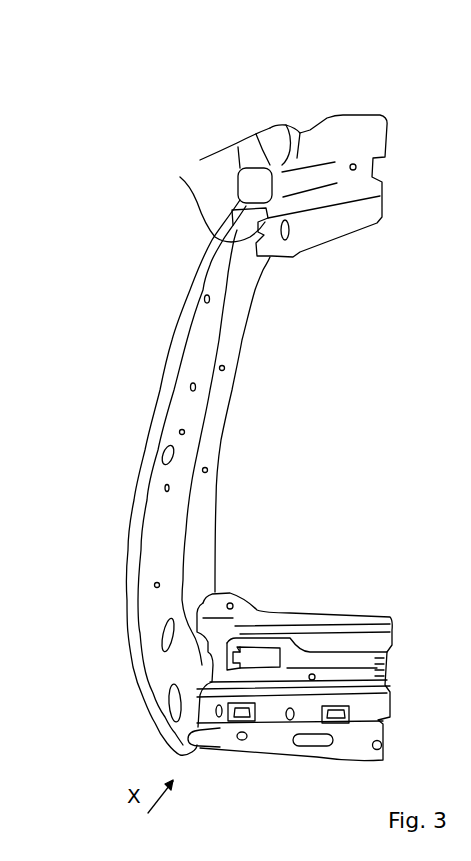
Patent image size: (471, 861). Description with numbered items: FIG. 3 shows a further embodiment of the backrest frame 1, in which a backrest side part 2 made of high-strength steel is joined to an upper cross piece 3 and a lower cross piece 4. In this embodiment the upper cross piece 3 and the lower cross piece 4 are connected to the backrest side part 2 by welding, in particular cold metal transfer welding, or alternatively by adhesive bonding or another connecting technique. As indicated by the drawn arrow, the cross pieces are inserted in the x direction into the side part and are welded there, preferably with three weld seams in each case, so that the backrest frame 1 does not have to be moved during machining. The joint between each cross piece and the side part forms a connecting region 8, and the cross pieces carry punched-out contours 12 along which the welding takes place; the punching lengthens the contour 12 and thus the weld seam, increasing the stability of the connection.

The backrest frame 1 is at (403, 104).
The backrest side part 2 is at (187, 403).
The upper cross piece 3 is at (357, 188).
The lower cross piece 4 is at (363, 722).
The connecting region 8 is at (268, 107).
The contour 12 is at (233, 192).